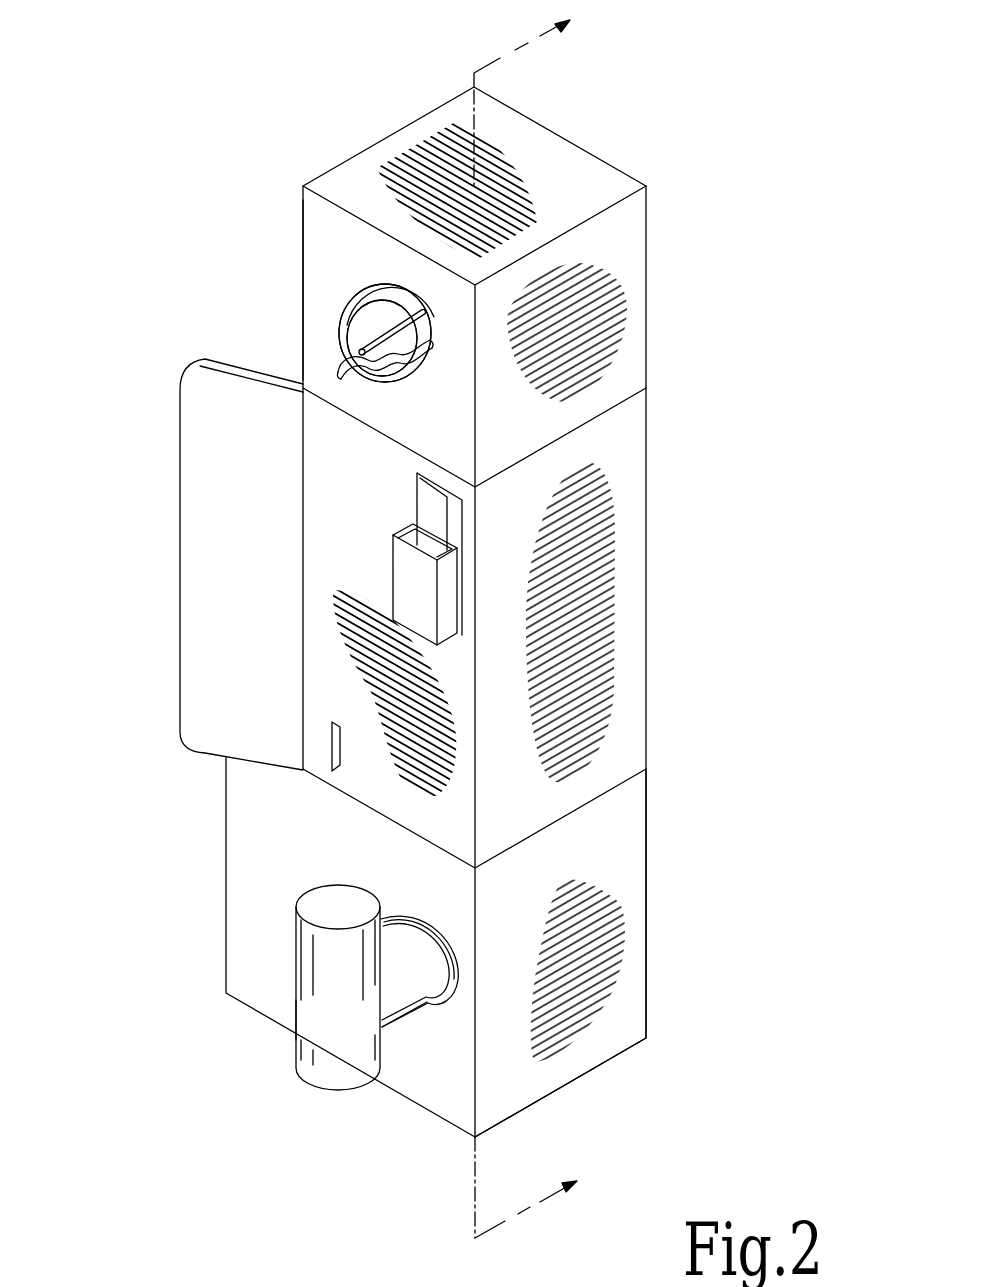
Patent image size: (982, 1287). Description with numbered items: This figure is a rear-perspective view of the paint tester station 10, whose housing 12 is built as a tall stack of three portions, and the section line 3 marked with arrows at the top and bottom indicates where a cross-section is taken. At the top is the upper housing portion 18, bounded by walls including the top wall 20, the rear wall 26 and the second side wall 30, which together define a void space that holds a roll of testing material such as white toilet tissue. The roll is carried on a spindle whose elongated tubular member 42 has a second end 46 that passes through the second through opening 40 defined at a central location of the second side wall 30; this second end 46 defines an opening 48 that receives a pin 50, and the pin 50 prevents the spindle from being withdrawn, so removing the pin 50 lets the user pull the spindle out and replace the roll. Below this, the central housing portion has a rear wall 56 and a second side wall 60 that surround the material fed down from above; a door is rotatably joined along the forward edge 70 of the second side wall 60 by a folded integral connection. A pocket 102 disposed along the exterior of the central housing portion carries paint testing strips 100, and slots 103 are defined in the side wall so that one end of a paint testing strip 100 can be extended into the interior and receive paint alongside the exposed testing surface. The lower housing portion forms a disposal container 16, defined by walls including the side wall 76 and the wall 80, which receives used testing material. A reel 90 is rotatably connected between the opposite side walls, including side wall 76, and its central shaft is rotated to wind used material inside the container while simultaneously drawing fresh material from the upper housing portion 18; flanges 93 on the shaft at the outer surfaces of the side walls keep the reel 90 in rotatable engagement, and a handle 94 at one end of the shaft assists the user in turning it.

The section line 3- 3 is at (540, 619).
The paint tester station 10 is at (692, 198).
The housing 12 is at (713, 471).
The disposal container 16 is at (673, 890).
The upper housing portion 18 is at (628, 178).
The top wall 20 is at (563, 173).
The rear wall 26 is at (630, 287).
The second side wall 30 is at (328, 231).
The second through opening 40 is at (353, 423).
The elongated tubular member 42 is at (352, 310).
The second end 46 is at (347, 308).
The opening 48 is at (395, 312).
The pin 50 is at (343, 380).
The rear wall 56 is at (630, 683).
The second side wall 60 is at (320, 643).
The forward edge 70 is at (302, 487).
The side wall 76 is at (238, 967).
The wall 80 is at (636, 1003).
The reel 90 is at (322, 1033).
The flanges 93 is at (440, 1012).
The handle 94 is at (300, 893).
The paint testing strips 100 is at (462, 536).
The pocket 102 is at (463, 585).
The slots 103 is at (330, 735).